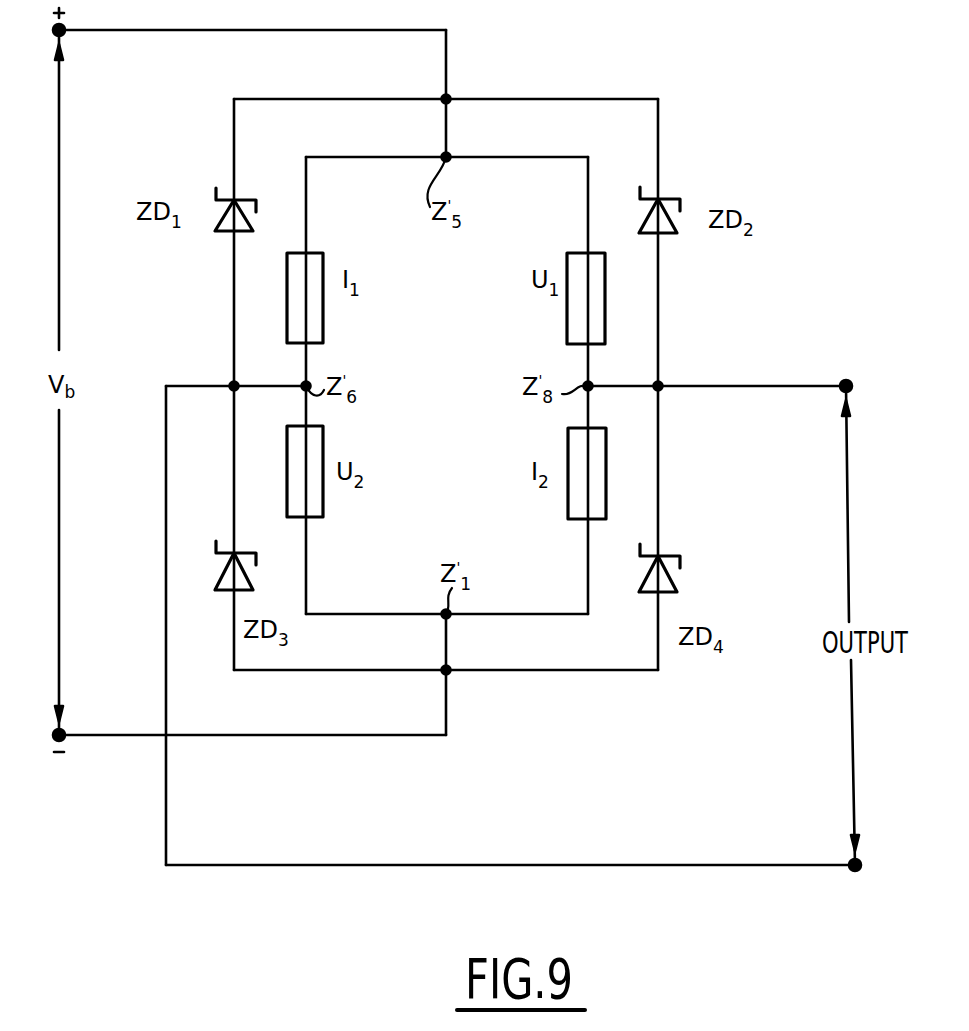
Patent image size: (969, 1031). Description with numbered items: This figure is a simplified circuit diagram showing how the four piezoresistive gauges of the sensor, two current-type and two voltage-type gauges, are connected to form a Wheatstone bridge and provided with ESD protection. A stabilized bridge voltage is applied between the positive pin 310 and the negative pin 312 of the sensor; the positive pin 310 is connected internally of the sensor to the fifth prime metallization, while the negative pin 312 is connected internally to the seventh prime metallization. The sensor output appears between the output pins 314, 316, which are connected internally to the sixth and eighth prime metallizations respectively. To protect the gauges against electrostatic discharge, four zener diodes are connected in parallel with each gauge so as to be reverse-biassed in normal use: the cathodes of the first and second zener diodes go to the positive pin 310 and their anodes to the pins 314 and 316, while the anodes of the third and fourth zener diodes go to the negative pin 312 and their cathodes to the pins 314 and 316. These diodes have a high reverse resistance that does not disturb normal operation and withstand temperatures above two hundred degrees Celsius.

The positive pin 310 is at (446, 99).
The negative pin 312 is at (446, 670).
The output pin 314 is at (234, 386).
The output pin 316 is at (714, 346).